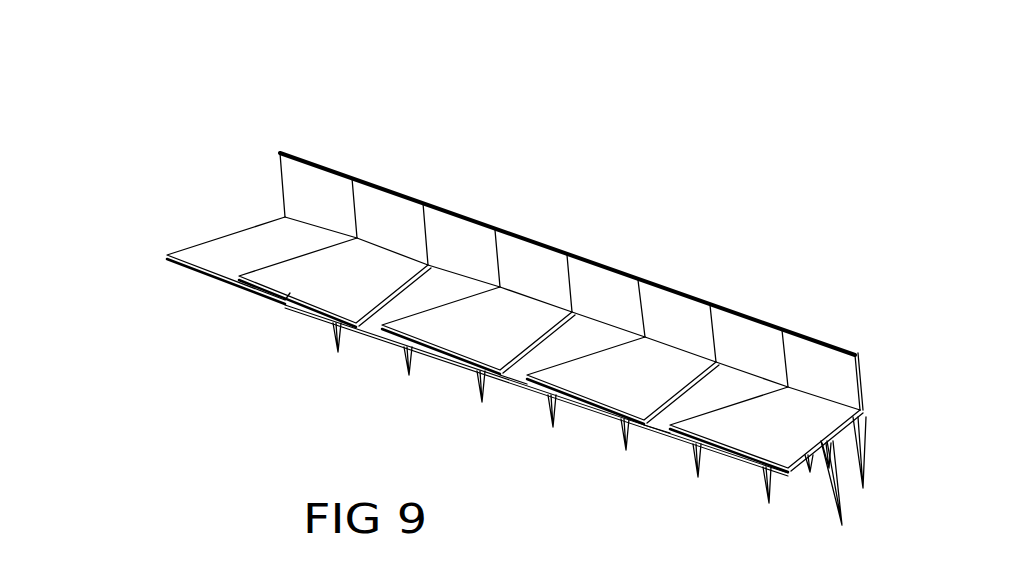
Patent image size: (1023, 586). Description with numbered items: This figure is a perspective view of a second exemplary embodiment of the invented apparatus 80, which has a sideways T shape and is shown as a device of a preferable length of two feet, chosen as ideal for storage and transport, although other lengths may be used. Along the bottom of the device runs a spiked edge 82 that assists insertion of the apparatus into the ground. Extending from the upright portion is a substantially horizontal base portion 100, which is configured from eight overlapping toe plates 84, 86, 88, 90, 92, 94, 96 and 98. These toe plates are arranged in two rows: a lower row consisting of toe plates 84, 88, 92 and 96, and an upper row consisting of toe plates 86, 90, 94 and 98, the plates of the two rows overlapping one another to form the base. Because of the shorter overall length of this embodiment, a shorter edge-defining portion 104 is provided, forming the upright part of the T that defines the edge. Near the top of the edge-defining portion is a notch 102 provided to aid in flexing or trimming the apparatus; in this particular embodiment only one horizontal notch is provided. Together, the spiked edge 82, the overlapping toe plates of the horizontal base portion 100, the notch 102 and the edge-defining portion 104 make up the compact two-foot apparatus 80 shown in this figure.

The apparatus 80 is at (738, 217).
The spiked edge 82 is at (889, 496).
The toe plate 84 is at (228, 262).
The toe plate 86 is at (327, 285).
The toe plate 88 is at (382, 315).
The toe plate 90 is at (448, 350).
The toe plate 92 is at (530, 362).
The toe plate 94 is at (598, 387).
The toe plate 96 is at (668, 412).
The toe plate 98 is at (758, 447).
The horizontal base portion 100 is at (207, 212).
The notch 102 is at (784, 336).
The edge-defining portion 104 is at (255, 160).